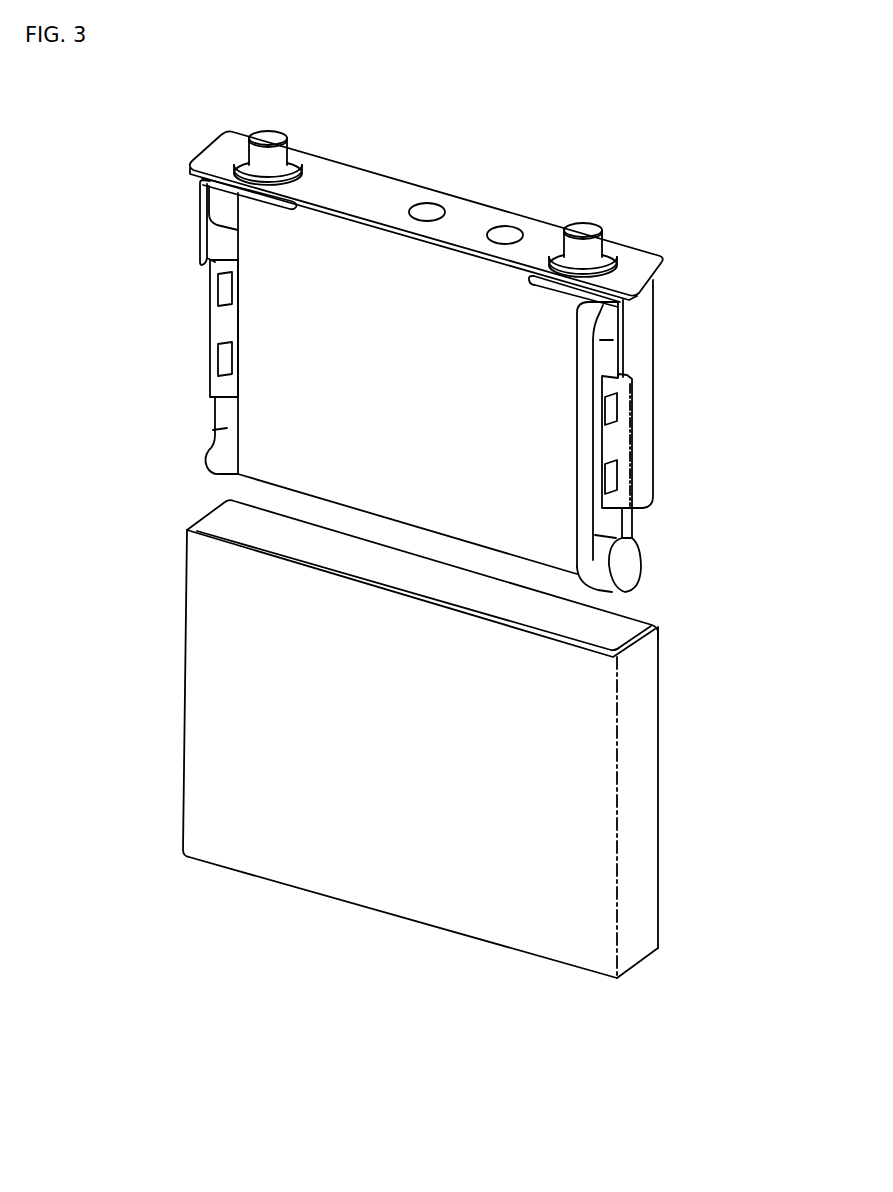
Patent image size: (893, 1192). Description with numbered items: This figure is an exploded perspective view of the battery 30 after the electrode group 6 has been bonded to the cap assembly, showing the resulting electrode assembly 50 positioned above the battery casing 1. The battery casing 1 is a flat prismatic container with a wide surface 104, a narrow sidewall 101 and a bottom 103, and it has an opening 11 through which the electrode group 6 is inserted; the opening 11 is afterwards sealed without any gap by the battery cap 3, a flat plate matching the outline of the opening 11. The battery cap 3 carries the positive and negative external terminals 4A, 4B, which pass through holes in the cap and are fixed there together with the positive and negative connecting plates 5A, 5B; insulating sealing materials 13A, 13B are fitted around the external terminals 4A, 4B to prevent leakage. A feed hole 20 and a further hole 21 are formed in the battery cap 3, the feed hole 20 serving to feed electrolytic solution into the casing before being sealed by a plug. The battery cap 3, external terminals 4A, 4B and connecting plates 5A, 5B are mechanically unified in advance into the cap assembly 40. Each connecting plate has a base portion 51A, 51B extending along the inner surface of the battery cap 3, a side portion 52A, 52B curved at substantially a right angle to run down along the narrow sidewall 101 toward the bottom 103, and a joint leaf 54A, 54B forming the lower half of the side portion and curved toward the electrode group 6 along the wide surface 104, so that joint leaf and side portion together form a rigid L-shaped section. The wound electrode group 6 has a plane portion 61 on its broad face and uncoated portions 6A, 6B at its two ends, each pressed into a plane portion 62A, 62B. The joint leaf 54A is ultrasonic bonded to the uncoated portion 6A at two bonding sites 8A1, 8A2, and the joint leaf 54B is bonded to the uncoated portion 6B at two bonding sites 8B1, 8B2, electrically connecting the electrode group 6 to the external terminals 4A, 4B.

The battery casing 1 is at (650, 827).
The battery cap 3 is at (635, 263).
The positive external terminal 4A is at (263, 133).
The negative external terminal 4B is at (587, 222).
The positive connecting plate 5A is at (195, 230).
The negative connecting plate 5B is at (645, 303).
The electrode group 6 is at (292, 452).
The positive uncoated portion 6A is at (217, 457).
The negative uncoated portion 6B is at (633, 560).
The bonding site 8A1 is at (217, 288).
The bonding site 8A2 is at (217, 360).
The bonding site 8B1 is at (610, 413).
The bonding site 8B2 is at (610, 483).
The opening 11 is at (640, 645).
The insulating sealing material 13A is at (243, 150).
The insulating sealing material 13B is at (605, 247).
The feed hole 20 is at (515, 225).
The hole 21 is at (430, 203).
The battery 30 is at (729, 145).
The cap assembly 40 is at (205, 142).
The electrode assembly 50 is at (372, 170).
The base portion 51A is at (277, 210).
The base portion 51B is at (553, 288).
The side portion 52A is at (195, 217).
The side portion 52B is at (643, 355).
The joint leaf 54A is at (223, 322).
The joint leaf 54B is at (615, 505).
The plane portion 61 is at (438, 383).
The plane portion 62A is at (218, 432).
The plane portion 62B is at (615, 525).
The narrow sidewall 101 is at (642, 913).
The bottom 103 is at (432, 928).
The wide surface 104 is at (292, 855).